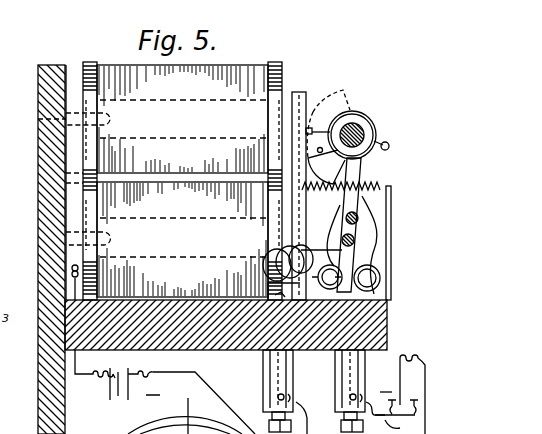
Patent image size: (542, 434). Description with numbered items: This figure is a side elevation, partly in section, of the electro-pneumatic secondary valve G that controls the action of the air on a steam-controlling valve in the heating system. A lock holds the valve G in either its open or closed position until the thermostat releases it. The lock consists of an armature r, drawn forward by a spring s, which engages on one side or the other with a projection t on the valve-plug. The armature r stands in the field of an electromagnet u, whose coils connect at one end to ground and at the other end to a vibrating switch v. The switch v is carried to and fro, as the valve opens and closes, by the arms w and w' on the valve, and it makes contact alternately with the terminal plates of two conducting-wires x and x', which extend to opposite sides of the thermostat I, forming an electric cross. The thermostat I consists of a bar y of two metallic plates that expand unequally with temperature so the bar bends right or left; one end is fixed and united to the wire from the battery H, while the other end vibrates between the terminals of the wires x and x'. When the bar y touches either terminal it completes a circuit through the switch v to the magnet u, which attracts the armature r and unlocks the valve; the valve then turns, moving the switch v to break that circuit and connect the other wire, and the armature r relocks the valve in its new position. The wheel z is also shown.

The electro-pneumatic valve G is at (197, 206).
The electromagnet u is at (182, 181).
The arm w' is at (202, 182).
The arm w is at (359, 223).
The vibrating switch v is at (362, 178).
The projection t is at (328, 137).
The armature r is at (308, 196).
The spring s is at (327, 243).
The conducting-wire x is at (365, 349).
The conducting-wire x' is at (324, 392).
The thermostatic bar y is at (412, 394).
The thermostat I is at (386, 383).
The battery H is at (165, 392).
The wheel z is at (185, 415).